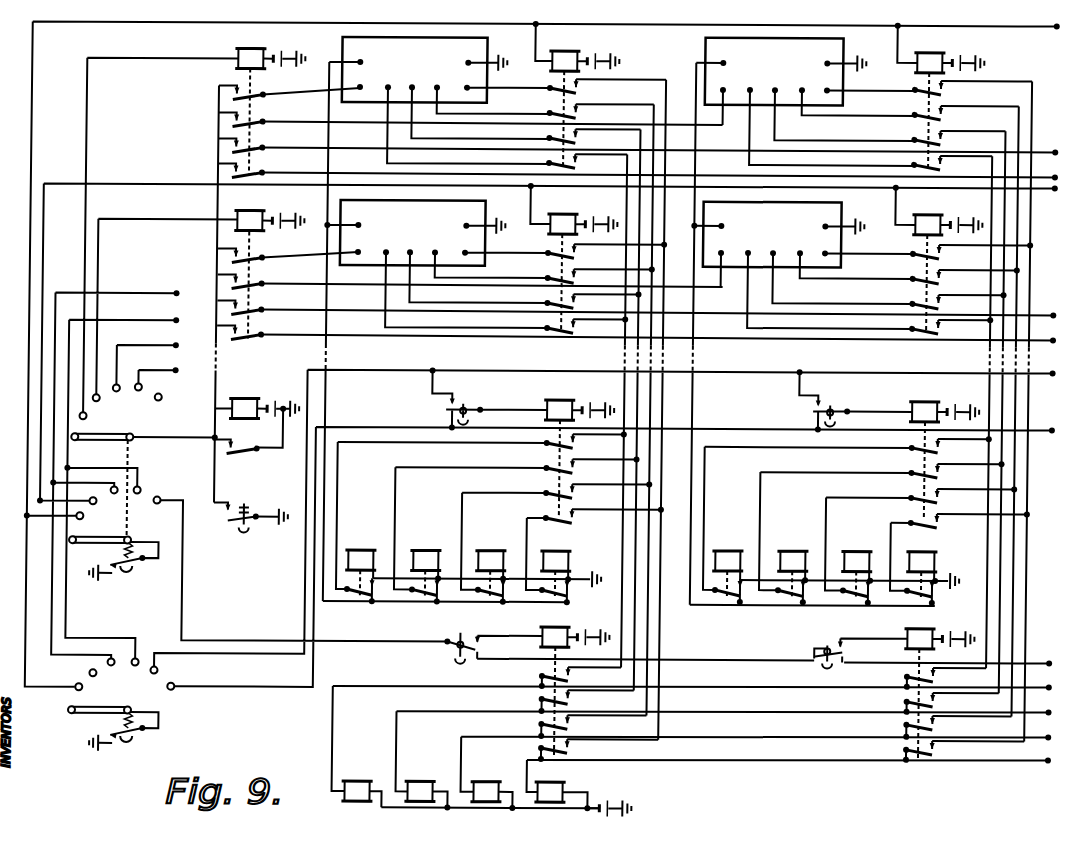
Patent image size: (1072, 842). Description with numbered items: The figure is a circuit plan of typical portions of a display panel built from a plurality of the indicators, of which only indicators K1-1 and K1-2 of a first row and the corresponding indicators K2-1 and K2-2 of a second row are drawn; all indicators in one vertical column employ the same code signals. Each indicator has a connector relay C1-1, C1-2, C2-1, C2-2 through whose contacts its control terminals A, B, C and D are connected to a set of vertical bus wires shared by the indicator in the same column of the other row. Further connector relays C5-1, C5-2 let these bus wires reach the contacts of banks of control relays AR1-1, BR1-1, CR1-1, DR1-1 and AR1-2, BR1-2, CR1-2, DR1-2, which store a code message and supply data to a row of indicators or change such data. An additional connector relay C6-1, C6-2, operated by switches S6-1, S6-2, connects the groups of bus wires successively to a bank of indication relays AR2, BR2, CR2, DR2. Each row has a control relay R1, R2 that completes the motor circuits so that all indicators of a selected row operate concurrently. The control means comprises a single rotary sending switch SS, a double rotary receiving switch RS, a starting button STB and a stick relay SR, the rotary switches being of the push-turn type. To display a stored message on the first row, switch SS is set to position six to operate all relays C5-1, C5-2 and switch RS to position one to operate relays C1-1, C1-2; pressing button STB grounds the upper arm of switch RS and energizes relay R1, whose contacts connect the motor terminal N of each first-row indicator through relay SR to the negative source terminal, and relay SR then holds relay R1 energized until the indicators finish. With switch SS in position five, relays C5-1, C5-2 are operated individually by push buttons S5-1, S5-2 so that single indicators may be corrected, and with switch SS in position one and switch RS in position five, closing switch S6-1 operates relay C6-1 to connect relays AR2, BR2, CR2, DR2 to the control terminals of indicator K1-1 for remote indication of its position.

The control relay R1 is at (289, 101).
The control relay R2 is at (288, 263).
The indicator K1-1 is at (439, 100).
The indicator K2-1 is at (437, 264).
The indicator K1-2 is at (805, 102).
The indicator K2-2 is at (803, 265).
The connector relay C1-1 is at (599, 95).
The connector relay C2-1 is at (597, 258).
The connector relay C1-2 is at (963, 97).
The connector relay C2-2 is at (962, 260).
The stick relay SR is at (256, 411).
The starting button STB is at (251, 503).
The receiving switch RS is at (141, 497).
The sending switch SS is at (112, 719).
The push button S5-1 is at (488, 386).
The push button S5-2 is at (854, 388).
The connector relay C5-1 is at (501, 448).
The connector relay C5-2 is at (868, 451).
The switch S6-1 is at (490, 638).
The switch S6-2 is at (855, 640).
The connector relay C6-1 is at (597, 683).
The connector relay C6-2 is at (962, 684).
The control relay AR1-1 is at (360, 523).
The control relay BR1-1 is at (421, 535).
The control relay CR1-1 is at (487, 549).
The control relay DR1-1 is at (553, 561).
The control relay AR1-2 is at (727, 526).
The control relay BR1-2 is at (787, 538).
The control relay CR1-2 is at (852, 551).
The control relay DR1-2 is at (918, 564).
The indication relay AR2 is at (356, 746).
The indication relay BR2 is at (421, 759).
The indication relay CR2 is at (486, 772).
The indication relay DR2 is at (579, 788).